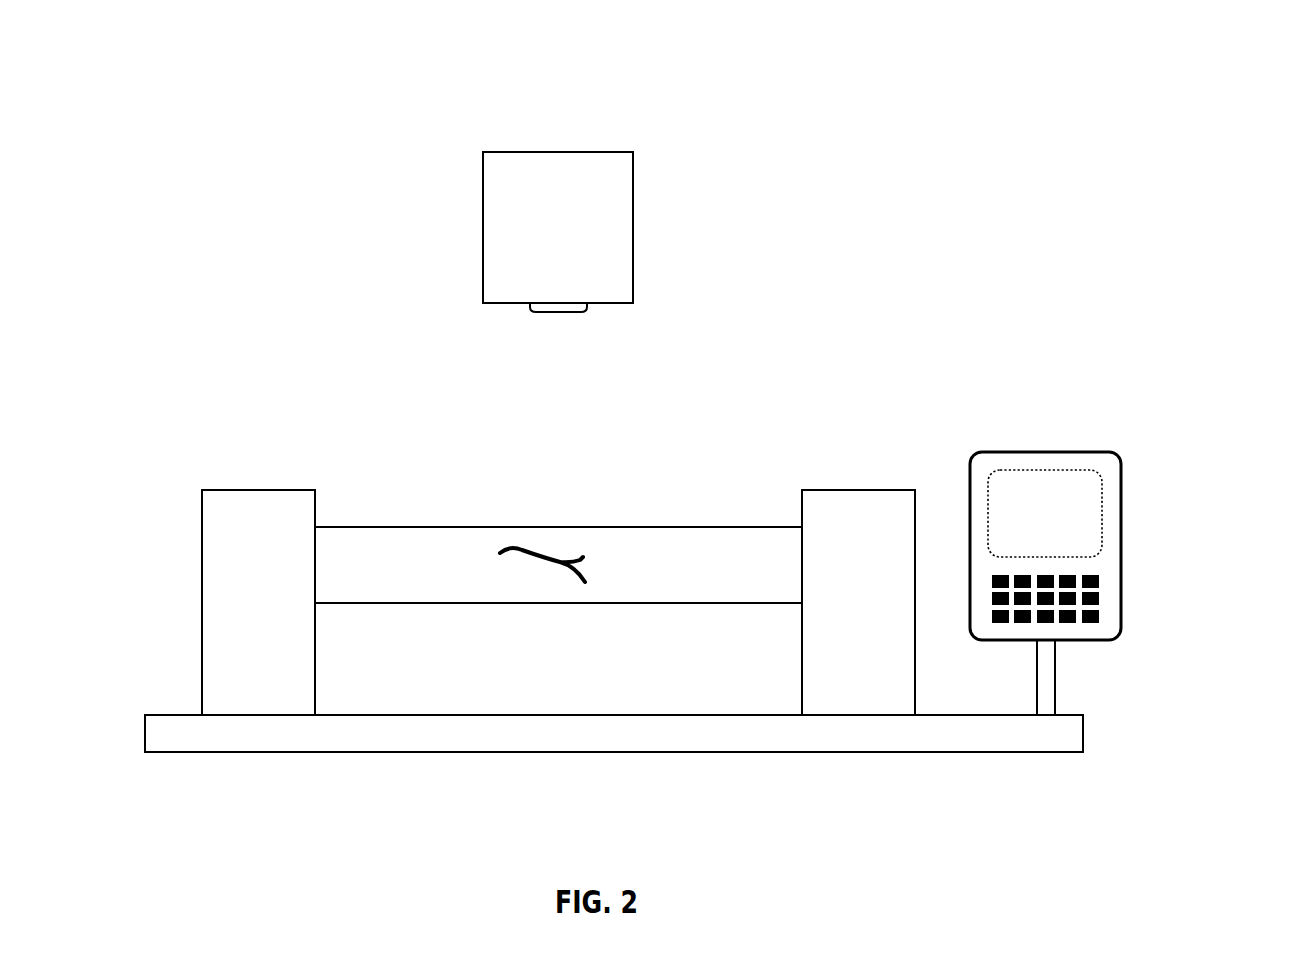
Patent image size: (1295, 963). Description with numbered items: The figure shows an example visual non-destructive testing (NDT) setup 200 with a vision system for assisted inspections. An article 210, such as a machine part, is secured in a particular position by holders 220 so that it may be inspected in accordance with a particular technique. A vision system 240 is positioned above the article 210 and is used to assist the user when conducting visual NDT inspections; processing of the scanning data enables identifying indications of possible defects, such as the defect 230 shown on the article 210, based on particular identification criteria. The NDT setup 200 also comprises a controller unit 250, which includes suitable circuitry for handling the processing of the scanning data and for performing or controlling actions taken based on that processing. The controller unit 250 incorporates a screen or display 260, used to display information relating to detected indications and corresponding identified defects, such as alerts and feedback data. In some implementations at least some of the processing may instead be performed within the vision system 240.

The NDT setup 200 is at (114, 80).
The article 210 is at (637, 610).
The holders 220 is at (558, 602).
The defect 230 is at (520, 568).
The vision system 240 is at (558, 232).
The controller unit 250 is at (1133, 647).
The screen or display 260 is at (1063, 503).